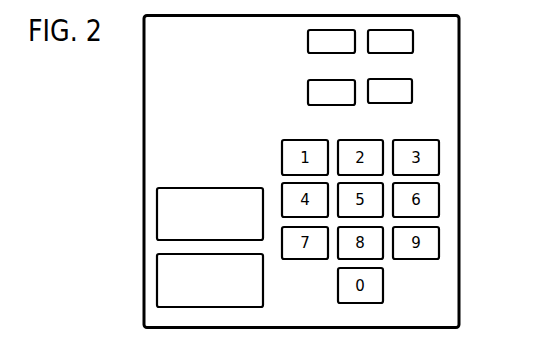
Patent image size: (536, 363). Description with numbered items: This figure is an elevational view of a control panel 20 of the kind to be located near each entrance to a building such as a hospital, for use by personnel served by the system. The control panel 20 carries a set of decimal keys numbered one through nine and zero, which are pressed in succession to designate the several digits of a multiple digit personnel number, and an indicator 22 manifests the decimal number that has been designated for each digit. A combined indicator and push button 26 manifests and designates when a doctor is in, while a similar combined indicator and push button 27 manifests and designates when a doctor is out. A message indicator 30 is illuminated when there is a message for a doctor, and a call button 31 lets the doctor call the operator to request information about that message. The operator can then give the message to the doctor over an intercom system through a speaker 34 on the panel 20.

The control panel 20 is at (460, 228).
The indicator 22 is at (177, 188).
The combined indicator and push button 26 is at (307, 45).
The combined indicator and push button 27 is at (307, 91).
The message indicator 30 is at (413, 41).
The call button 31 is at (413, 90).
The speaker 34 is at (157, 285).